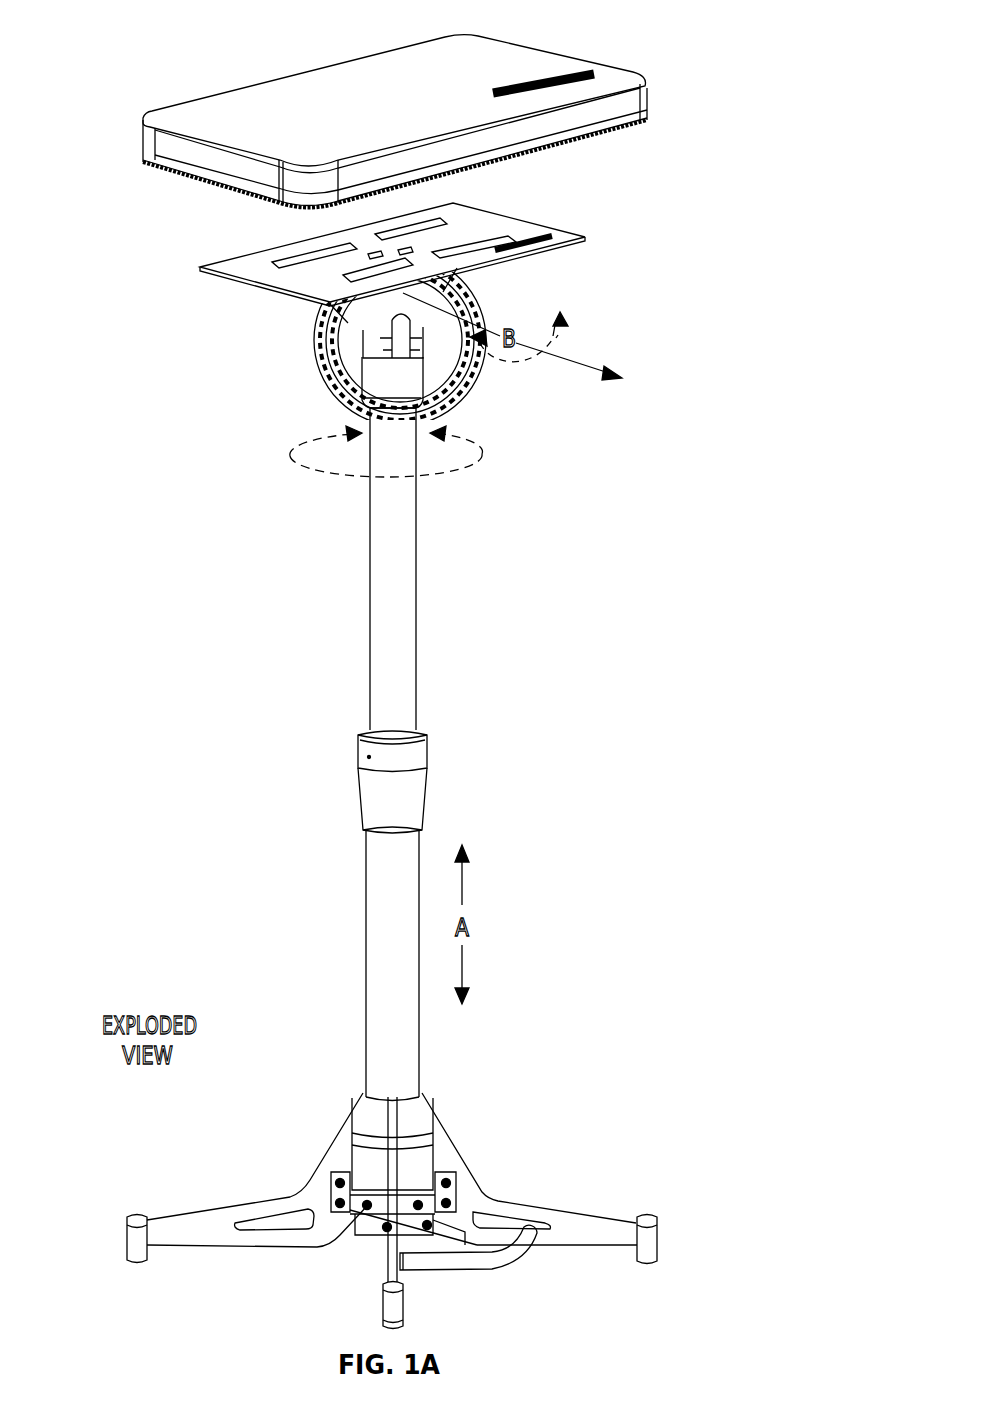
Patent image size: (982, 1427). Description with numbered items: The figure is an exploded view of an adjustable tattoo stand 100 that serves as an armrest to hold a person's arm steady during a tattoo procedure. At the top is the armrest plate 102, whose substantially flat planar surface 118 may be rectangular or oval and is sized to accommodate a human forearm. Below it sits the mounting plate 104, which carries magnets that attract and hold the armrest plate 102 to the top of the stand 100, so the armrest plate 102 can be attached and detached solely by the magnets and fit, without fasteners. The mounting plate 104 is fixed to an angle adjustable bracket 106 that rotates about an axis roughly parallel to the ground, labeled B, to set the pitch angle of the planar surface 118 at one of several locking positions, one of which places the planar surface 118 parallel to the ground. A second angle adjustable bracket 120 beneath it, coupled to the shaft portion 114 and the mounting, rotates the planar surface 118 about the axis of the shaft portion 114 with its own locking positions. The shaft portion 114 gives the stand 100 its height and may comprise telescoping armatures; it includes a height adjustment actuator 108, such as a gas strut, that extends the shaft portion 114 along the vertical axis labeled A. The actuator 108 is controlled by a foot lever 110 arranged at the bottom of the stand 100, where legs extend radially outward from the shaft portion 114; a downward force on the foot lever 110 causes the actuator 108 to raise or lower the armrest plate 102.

The adjustable tattoo stand 100 is at (718, 104).
The armrest plate 102 is at (170, 146).
The mounting plate 104 is at (255, 270).
The angle adjustable bracket 106 is at (346, 304).
The height adjustment actuator 108 is at (390, 888).
The foot lever 110 is at (480, 1265).
The shaft portion 114 is at (370, 650).
The planar surface 118 is at (290, 100).
The second angle adjustable bracket 120 is at (412, 386).